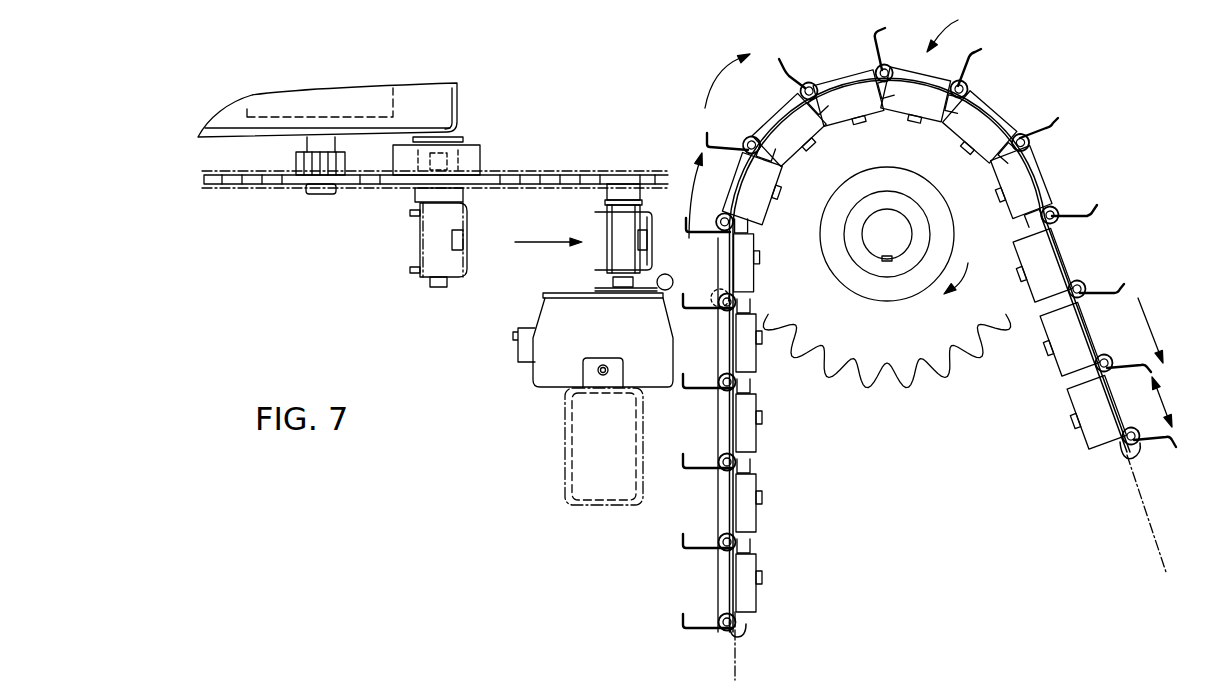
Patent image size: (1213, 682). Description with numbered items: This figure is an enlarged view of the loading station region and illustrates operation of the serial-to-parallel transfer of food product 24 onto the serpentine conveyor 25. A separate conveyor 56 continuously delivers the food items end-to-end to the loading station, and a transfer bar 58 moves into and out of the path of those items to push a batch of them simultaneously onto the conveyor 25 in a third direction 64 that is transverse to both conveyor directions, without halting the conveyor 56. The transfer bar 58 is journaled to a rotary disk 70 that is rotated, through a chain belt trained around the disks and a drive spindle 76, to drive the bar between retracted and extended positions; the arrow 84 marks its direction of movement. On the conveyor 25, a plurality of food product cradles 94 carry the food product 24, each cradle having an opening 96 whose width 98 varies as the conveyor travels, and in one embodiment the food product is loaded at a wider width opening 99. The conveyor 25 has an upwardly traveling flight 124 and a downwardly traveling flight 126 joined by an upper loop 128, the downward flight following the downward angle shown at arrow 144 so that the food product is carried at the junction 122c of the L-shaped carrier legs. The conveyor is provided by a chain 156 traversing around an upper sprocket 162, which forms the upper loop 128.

The food product 24 is at (671, 273).
The serpentine conveyor 25 is at (757, 622).
The conveyor 56 is at (590, 295).
The transfer bar 58 is at (650, 240).
The third direction 64 is at (698, 285).
The rotary disk 70 is at (535, 174).
The drive spindle 76 is at (300, 160).
The direction arrow 84 is at (540, 244).
The food product cradle 94 is at (958, 30).
The opening 96 is at (942, 75).
The width 98 is at (1160, 400).
The wider width opening 99 is at (685, 205).
The junction 122c is at (1097, 360).
The upwardly traveling flight 124 is at (718, 620).
The downwardly traveling flight 126 is at (1083, 441).
The upper loop 128 is at (902, 358).
The arrow 144 is at (1150, 323).
The chain 156 is at (752, 574).
The upper sprocket 162 is at (948, 380).